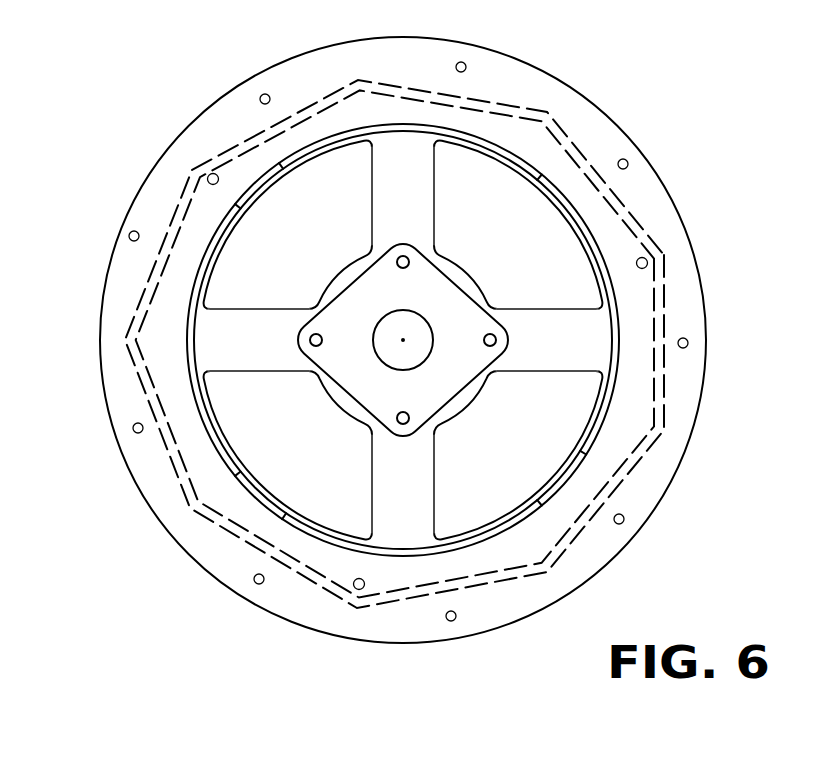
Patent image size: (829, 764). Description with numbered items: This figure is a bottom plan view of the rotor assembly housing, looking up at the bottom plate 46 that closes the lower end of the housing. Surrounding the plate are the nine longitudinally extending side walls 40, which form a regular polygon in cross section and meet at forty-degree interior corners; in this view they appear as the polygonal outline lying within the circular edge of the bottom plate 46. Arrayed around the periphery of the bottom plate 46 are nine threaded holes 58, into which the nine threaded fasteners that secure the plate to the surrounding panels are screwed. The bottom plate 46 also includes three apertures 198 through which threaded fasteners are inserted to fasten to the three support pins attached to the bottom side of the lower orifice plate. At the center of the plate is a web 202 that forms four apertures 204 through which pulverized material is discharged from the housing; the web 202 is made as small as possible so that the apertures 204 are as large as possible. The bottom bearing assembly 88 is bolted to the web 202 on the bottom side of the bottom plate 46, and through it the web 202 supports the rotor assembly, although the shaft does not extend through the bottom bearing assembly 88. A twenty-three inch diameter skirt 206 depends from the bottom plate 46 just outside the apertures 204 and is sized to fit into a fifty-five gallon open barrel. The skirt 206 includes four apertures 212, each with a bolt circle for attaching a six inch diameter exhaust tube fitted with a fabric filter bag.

The side walls 40 is at (495, 587).
The bottom plate 46 is at (698, 414).
The threaded holes 58 is at (461, 62).
The bottom bearing assembly 88 is at (366, 379).
The apertures 198 is at (209, 174).
The web 202 is at (420, 484).
The apertures 204 is at (323, 253).
The skirt 206 is at (211, 439).
The apertures 212 is at (263, 172).